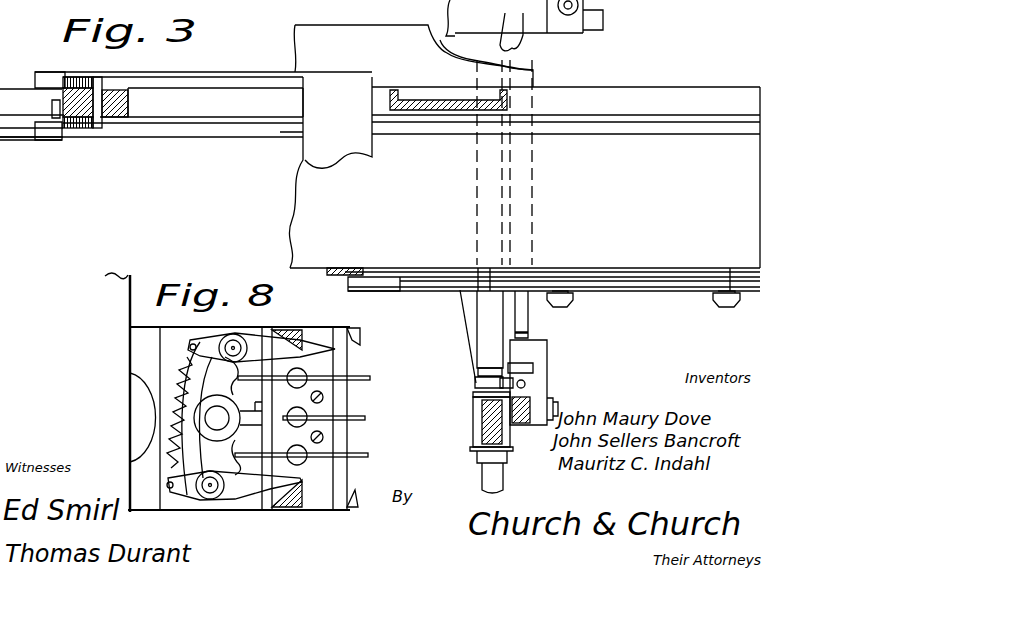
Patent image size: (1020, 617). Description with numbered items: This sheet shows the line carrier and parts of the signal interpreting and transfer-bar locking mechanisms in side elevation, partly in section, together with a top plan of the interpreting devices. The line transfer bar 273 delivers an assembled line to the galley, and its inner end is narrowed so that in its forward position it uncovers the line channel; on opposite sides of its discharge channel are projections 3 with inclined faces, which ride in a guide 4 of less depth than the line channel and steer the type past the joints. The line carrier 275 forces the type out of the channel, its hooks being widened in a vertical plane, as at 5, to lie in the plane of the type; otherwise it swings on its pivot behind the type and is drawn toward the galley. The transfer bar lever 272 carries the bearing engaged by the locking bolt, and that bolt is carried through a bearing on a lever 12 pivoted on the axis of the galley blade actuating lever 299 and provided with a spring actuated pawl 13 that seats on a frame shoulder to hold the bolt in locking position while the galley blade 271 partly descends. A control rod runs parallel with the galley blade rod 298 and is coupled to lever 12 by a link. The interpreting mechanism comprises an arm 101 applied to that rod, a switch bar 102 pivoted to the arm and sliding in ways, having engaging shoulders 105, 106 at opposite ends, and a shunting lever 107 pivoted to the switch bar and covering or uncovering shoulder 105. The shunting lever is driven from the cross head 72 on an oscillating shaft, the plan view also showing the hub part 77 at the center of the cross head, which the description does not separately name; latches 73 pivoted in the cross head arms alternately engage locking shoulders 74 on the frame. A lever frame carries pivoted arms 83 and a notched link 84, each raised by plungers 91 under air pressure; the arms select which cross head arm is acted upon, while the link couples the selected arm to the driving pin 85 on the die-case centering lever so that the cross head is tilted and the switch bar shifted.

In FIG. 3, the projections 3 is at (67, 132).
In FIG. 3, the guide 4 is at (50, 123).
In FIG. 3, the widened hooks 5 is at (48, 72).
In FIG. 3, the galley blade 271 is at (411, 146).
In FIG. 3, the transfer bar lever 272 is at (417, 110).
In FIG. 3, the line transfer bar 273 is at (212, 112).
In FIG. 3, the line carrier 275 is at (232, 64).
In FIG. 3, the arm 101 is at (490, 277).
In FIG. 3, the switch bar 102 is at (643, 272).
In FIG. 3, the engaging shoulder 105 is at (402, 283).
In FIG. 3, the engaging shoulder 106 is at (742, 272).
In FIG. 3, the shunting lever 107 is at (385, 277).
In FIG. 3, the galley blade rod 298 is at (482, 310).
In FIG. 3, the spring actuated pawl 13 is at (492, 362).
In FIG. 3, the galley blade actuating lever 299 is at (476, 410).
In FIG. 3, the lever 12 is at (531, 395).
In FIG. 8, the cross head 72 is at (212, 378).
In FIG. 8, the hub 77 is at (212, 421).
In FIG. 8, the latches 73 is at (255, 342).
In FIG. 8, the locking shoulders 74 is at (296, 335).
In FIG. 8, the pin 85 is at (342, 337).
In FIG. 8, the pivoted arms 83 is at (357, 375).
In FIG. 8, the notched link 84 is at (353, 417).
In FIG. 8, the plungers 91 is at (296, 386).